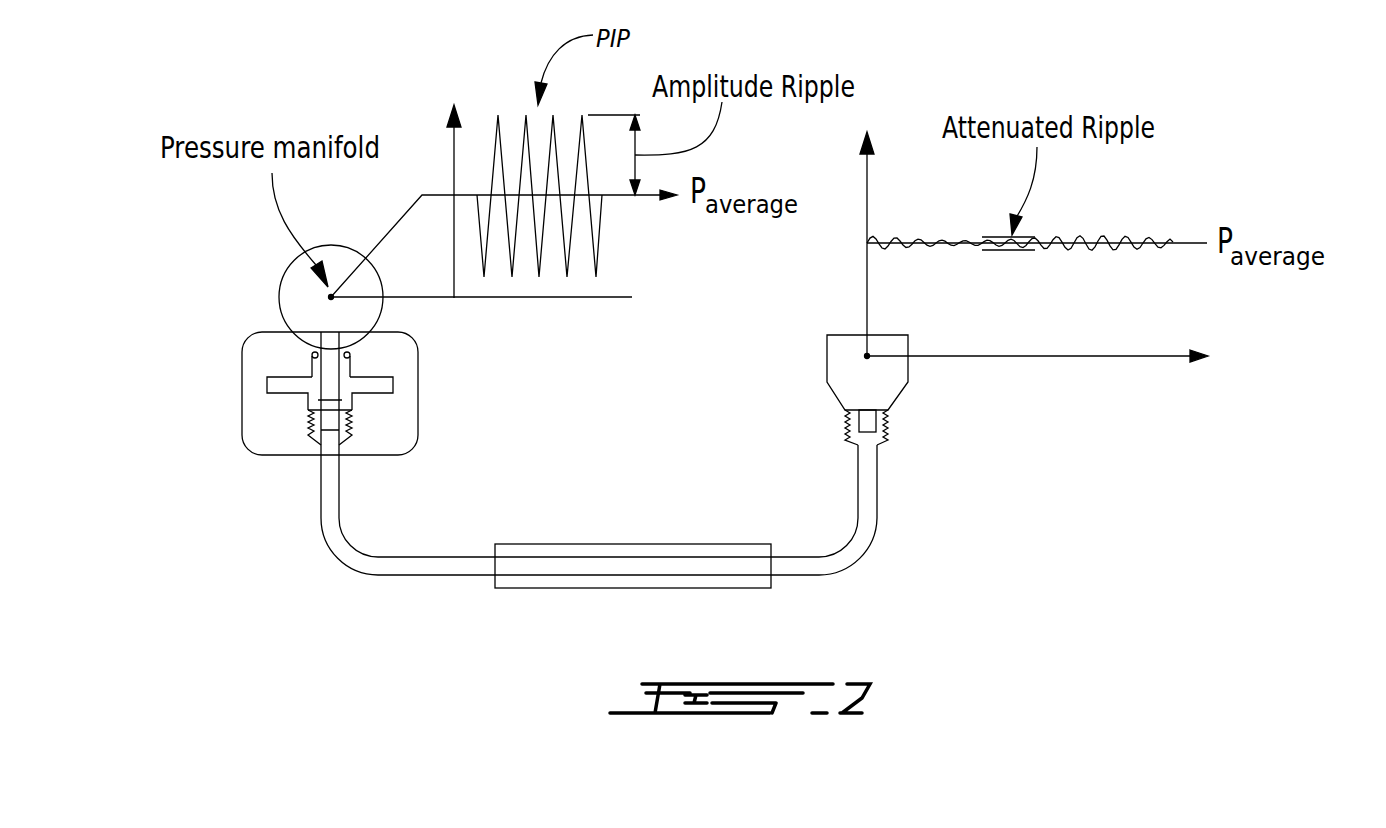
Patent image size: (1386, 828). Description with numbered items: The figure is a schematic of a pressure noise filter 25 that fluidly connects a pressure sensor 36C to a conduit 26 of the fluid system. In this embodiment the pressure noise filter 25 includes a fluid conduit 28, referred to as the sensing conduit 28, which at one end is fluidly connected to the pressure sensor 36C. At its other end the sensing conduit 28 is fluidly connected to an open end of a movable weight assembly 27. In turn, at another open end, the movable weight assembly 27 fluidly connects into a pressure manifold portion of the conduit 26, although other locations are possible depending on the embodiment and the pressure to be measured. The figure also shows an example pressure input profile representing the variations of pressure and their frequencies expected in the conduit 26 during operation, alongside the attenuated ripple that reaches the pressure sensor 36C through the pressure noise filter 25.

The pressure noise filter 25 is at (296, 568).
The conduit 26 is at (278, 280).
The movable weight assembly 27 is at (242, 393).
The fluid conduit (sensing conduit) 28 is at (840, 558).
The pressure sensor 36C is at (867, 385).